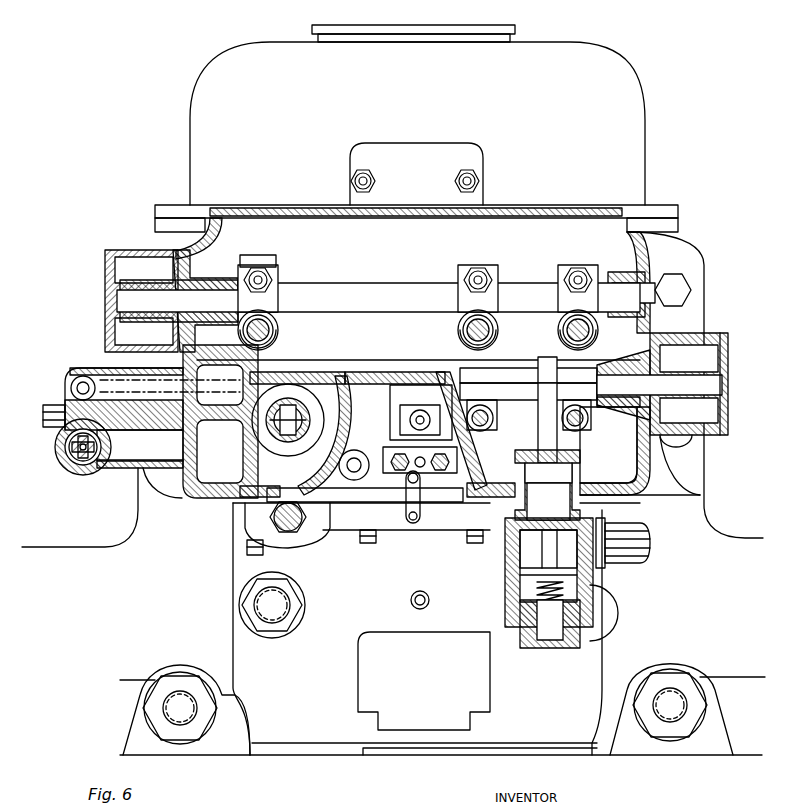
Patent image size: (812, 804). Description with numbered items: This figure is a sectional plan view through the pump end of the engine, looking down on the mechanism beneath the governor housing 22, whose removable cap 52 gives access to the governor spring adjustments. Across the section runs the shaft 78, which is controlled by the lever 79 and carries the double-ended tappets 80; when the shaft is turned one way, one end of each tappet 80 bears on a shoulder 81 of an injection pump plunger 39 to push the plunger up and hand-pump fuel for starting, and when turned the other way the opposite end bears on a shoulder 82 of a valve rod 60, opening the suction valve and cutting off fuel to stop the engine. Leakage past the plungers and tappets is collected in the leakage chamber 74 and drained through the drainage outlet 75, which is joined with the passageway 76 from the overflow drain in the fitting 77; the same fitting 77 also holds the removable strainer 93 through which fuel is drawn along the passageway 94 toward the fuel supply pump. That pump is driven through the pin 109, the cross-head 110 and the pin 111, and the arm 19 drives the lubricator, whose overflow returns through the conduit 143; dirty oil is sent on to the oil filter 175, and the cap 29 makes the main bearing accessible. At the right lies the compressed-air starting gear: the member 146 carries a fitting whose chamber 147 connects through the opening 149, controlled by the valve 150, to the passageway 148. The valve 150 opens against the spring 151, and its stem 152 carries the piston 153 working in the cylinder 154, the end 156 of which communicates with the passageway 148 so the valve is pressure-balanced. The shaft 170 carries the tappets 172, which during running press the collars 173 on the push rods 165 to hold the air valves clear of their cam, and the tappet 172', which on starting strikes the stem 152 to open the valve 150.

The housing 22 is at (417, 115).
The removable cap 52 is at (416, 174).
The lever 79 is at (140, 268).
The shaft 78 is at (378, 297).
The leakage chamber 74 is at (418, 344).
The double-ended tappets 80 is at (278, 285).
The shoulders 82 is at (256, 272).
The valve rod 60 is at (268, 275).
The injection pump plungers 39 is at (272, 330).
The shoulder 81 is at (272, 342).
The passageway 76 is at (220, 421).
The cross-head 110 is at (292, 405).
The pin 111 is at (305, 418).
The pin 109 is at (404, 426).
The arm 19 is at (410, 416).
The conduit 143 is at (413, 522).
The shaft 170 is at (474, 378).
The tappet 172' is at (565, 370).
The tappets 172 is at (561, 411).
The stem 152 is at (538, 410).
The oil filter 175 is at (484, 430).
The collars 173 is at (578, 428).
The push rods 165 is at (480, 430).
The end of cylinder 156 is at (580, 456).
The piston 153 is at (548, 501).
The drainage outlet 75 is at (105, 368).
The fitting 77 is at (72, 378).
The passageway 94 is at (140, 449).
The removable strainer 93 is at (56, 447).
The cap 29 is at (442, 629).
The cylinder 154 is at (600, 498).
The opening 149 is at (530, 561).
The passageway 148 is at (525, 592).
The spring 151 is at (585, 625).
The valve 150 is at (598, 600).
The member 146 is at (605, 565).
The chamber 147 is at (650, 535).